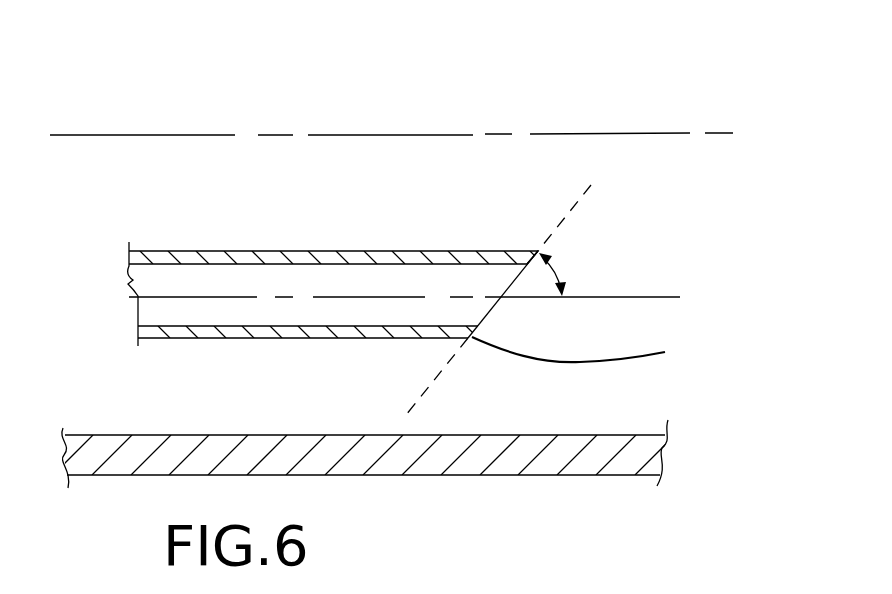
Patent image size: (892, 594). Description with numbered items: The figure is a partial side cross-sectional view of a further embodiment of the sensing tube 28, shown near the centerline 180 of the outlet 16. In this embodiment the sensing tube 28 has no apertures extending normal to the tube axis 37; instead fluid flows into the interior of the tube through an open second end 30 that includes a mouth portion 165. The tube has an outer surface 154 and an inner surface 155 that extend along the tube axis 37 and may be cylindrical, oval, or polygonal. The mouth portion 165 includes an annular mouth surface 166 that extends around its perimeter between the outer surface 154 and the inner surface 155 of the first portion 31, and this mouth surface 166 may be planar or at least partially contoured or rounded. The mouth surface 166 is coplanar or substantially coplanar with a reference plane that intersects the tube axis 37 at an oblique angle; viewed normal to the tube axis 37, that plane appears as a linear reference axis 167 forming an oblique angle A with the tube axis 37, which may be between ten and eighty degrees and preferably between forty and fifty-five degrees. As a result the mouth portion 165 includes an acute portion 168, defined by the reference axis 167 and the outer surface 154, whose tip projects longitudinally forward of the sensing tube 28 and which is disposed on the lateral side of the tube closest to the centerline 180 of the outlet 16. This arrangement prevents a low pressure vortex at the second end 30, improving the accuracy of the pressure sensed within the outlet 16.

The outlet 16 is at (585, 433).
The sensing tube 28 is at (524, 158).
The second end 30 is at (423, 356).
The first portion 31 is at (308, 200).
The tube axis 37 is at (645, 297).
The outer surface 154 is at (335, 250).
The inner surface 155 is at (218, 268).
The mouth portion 165 is at (487, 314).
The mouth surface 166 is at (605, 357).
The reference axis 167 is at (596, 181).
The acute portion 168 is at (533, 250).
The centerline of the outlet 180 is at (718, 131).
The oblique angle A is at (561, 273).